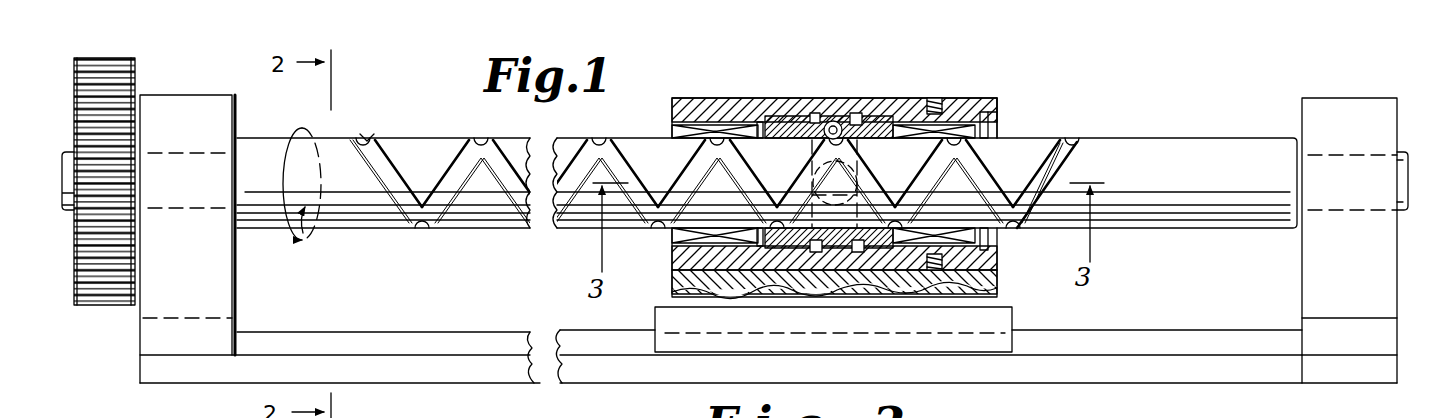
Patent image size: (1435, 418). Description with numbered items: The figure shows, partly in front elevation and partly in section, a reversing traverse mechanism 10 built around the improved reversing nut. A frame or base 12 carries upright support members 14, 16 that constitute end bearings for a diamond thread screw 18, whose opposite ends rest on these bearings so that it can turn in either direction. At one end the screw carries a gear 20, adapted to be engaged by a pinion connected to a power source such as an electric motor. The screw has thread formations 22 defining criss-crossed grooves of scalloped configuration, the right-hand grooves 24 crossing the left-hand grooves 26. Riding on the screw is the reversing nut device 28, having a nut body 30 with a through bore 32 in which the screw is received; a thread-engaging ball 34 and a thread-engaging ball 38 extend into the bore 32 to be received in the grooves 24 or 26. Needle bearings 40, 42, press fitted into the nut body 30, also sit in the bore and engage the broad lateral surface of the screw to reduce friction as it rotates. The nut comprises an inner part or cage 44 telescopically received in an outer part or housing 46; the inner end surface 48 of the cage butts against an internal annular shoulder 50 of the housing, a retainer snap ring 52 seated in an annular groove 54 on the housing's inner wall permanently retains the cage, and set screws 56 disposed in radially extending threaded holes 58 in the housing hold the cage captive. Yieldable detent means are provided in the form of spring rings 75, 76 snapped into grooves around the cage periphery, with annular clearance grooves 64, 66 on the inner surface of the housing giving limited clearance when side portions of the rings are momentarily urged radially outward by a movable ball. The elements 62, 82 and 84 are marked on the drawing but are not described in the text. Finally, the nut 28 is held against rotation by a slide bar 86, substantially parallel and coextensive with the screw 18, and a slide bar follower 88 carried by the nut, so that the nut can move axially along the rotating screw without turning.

The traverse mechanism 10 is at (1214, 102).
The frame or base 12 is at (486, 385).
The upright support member 14 is at (183, 106).
The upright support member 16 is at (1355, 112).
The diamond thread screw 18 is at (419, 127).
The gear 20 is at (108, 298).
The thread formations 22 is at (433, 158).
The right-hand grooves 24 is at (509, 192).
The left-hand grooves 26 is at (449, 196).
The reversing nut device 28 is at (652, 285).
The nut body 30 is at (901, 93).
The through bore 32 is at (836, 262).
The thread-engaging ball 34 is at (848, 114).
The thread-engaging ball 38 is at (876, 172).
The needle bearing 40 is at (702, 118).
The needle bearing 42 is at (990, 100).
The cage 44 is at (795, 116).
The housing 46 is at (723, 98).
The inner end surface 48 is at (770, 262).
The internal annular shoulder 50 is at (762, 122).
The retainer snap ring 52 is at (1000, 116).
The annular groove 54 is at (991, 130).
The set screws 56 is at (946, 124).
The threaded holes 58 is at (933, 99).
The ball 62 is at (843, 122).
The annular clearance groove 64 is at (815, 112).
The annular clearance groove 66 is at (855, 112).
The spring ring 75 is at (798, 258).
The spring ring 76 is at (860, 270).
The groove end notch 82 is at (366, 138).
The groove end notch 84 is at (1068, 141).
The slide bar 86 is at (1112, 345).
The slide bar follower 88 is at (1012, 315).